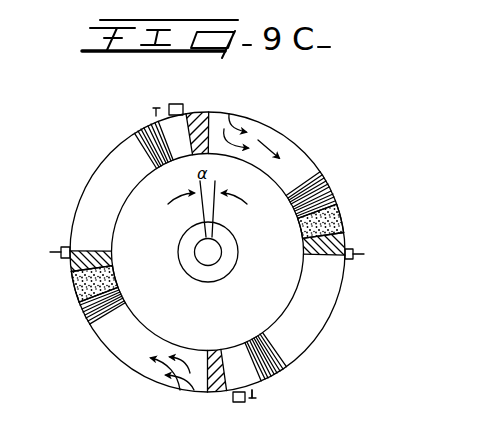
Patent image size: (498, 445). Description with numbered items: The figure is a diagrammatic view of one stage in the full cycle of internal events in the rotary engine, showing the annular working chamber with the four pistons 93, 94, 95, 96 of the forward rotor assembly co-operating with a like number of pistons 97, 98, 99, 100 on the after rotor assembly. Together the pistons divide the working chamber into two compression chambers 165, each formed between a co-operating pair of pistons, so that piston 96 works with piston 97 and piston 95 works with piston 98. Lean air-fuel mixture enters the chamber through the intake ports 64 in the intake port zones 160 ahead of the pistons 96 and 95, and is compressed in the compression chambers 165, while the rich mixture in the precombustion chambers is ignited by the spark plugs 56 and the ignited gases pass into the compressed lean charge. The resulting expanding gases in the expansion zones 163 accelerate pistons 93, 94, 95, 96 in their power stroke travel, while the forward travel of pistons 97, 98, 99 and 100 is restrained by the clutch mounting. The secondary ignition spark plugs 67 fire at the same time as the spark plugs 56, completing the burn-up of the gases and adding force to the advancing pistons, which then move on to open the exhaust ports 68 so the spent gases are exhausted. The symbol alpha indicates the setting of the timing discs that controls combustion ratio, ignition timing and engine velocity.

The spark plugs 56 is at (354, 254).
The intake ports 64 is at (229, 114).
The secondary ignition spark plugs 67 is at (253, 398).
The exhaust ports 68 is at (176, 104).
The piston 93 is at (272, 380).
The piston 94 is at (147, 124).
The piston 95 is at (86, 318).
The piston 96 is at (322, 180).
The piston 97 is at (340, 243).
The piston 98 is at (74, 268).
The piston 99 is at (214, 393).
The piston 100 is at (197, 111).
The intake port zones 160 is at (268, 132).
The expansion zones 163 is at (84, 198).
The compression chambers 165 is at (337, 207).